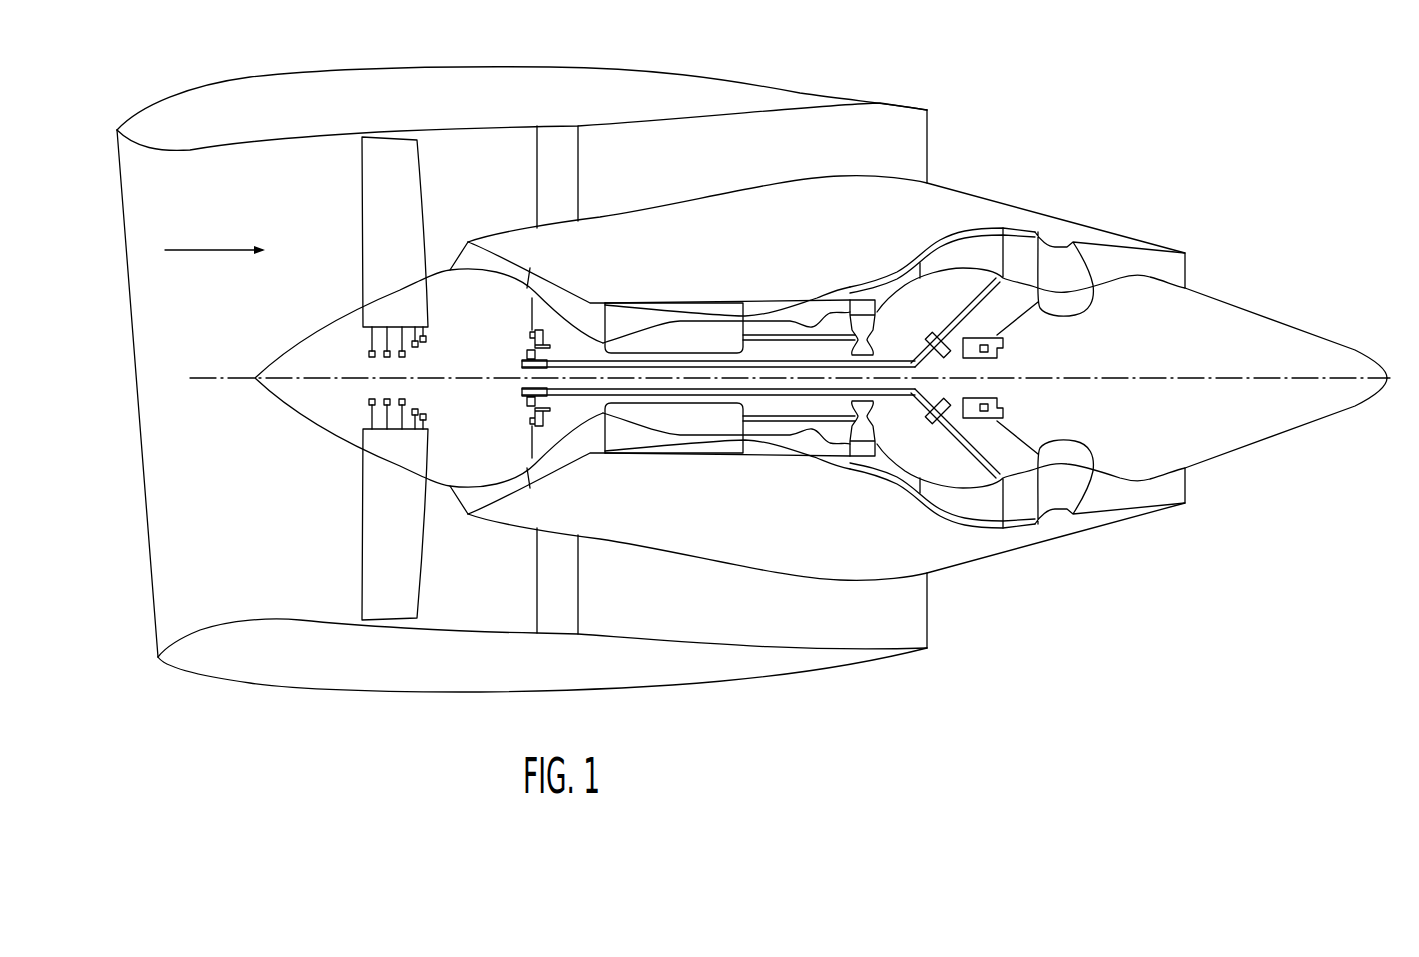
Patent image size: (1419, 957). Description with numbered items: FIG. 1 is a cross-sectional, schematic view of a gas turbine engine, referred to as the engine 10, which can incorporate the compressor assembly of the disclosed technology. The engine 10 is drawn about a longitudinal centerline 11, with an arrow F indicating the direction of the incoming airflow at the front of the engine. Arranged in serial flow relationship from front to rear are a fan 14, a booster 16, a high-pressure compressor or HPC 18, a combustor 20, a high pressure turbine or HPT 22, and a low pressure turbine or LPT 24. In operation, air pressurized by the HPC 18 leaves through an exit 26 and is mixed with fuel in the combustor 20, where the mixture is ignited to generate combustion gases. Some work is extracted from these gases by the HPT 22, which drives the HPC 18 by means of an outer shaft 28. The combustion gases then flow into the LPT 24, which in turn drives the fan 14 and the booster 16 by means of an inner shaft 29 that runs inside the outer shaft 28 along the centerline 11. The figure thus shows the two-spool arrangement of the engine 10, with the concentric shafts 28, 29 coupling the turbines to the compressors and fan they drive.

The engine 10 is at (922, 52).
The longitudinal centerline axis 11 is at (193, 378).
The airflow direction F is at (217, 247).
The fan 14 is at (377, 210).
The booster 16 is at (508, 262).
The high-pressure compressor 18 is at (627, 318).
The combustor 20 is at (817, 310).
The high pressure turbine 22 is at (862, 465).
The low pressure turbine 24 is at (963, 250).
The exit 26 is at (745, 443).
The outer shaft 28 is at (812, 427).
The inner shaft 29 is at (648, 397).